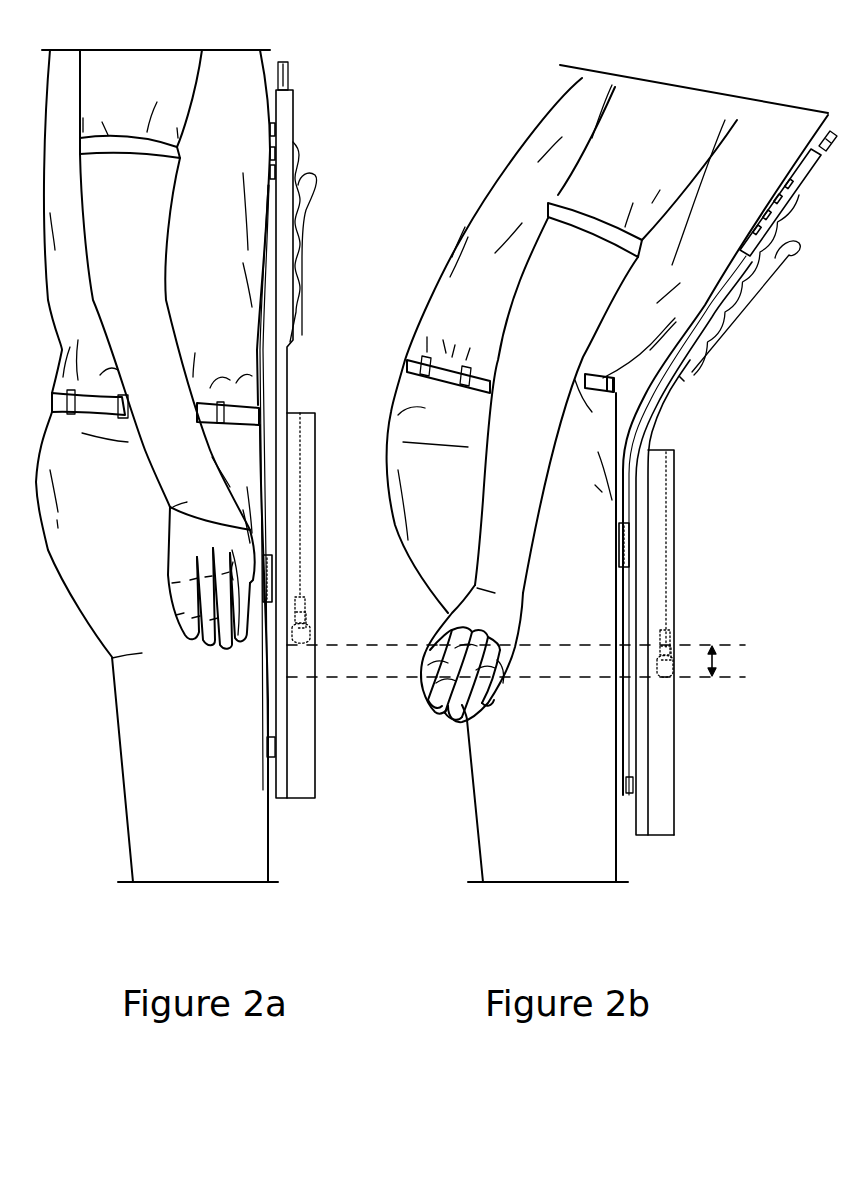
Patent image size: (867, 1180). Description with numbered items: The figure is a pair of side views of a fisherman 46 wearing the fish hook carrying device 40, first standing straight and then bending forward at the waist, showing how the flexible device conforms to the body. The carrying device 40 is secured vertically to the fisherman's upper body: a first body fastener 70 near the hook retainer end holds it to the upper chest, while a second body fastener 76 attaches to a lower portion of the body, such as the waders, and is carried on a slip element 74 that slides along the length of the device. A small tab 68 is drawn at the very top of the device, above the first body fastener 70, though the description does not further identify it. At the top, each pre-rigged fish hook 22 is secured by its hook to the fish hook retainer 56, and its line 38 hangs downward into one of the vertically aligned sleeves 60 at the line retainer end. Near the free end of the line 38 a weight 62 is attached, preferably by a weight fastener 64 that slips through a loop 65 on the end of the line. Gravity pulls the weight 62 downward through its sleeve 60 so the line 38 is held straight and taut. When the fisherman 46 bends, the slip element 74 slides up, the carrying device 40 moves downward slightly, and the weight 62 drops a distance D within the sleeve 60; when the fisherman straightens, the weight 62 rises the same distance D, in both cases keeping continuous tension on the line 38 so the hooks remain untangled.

In FIG. 2A, the pre-rigged fish hook 22 is at (314, 182).
In FIG. 2B, the pre-rigged fish hook 22 is at (784, 250).
In FIG. 2A, the line 38 is at (303, 377).
In FIG. 2B, the line 38 is at (688, 408).
In FIG. 2A, the fish hook carrying device 40 is at (333, 215).
In FIG. 2B, the fish hook carrying device 40 is at (744, 318).
In FIG. 2A, the fisherman 46 is at (222, 204).
In FIG. 2B, the fisherman 46 is at (733, 218).
In FIG. 2A, the fish hook retainer 56 is at (294, 152).
In FIG. 2B, the fish hook retainer 56 is at (786, 222).
In FIG. 2A, the sleeve 60 is at (301, 777).
In FIG. 2B, the sleeve 60 is at (662, 810).
In FIG. 2A, the weight 62 is at (307, 634).
In FIG. 2B, the weight 62 is at (672, 678).
In FIG. 2A, the weight fastener 64 is at (305, 618).
In FIG. 2B, the weight fastener 64 is at (668, 650).
In FIG. 2A, the loop 65 is at (304, 603).
In FIG. 2B, the loop 65 is at (661, 640).
In FIG. 2A, the upper tab 68 is at (290, 78).
In FIG. 2B, the upper tab 68 is at (829, 153).
In FIG. 2A, the first body fastener 70 is at (274, 132).
In FIG. 2B, the first body fastener 70 is at (788, 200).
In FIG. 2A, the slip element 74 is at (273, 557).
In FIG. 2B, the slip element 74 is at (631, 537).
In FIG. 2A, the second body fastener 76 is at (274, 578).
In FIG. 2B, the second body fastener 76 is at (629, 553).
In FIG. 2B, the distance D is at (726, 661).